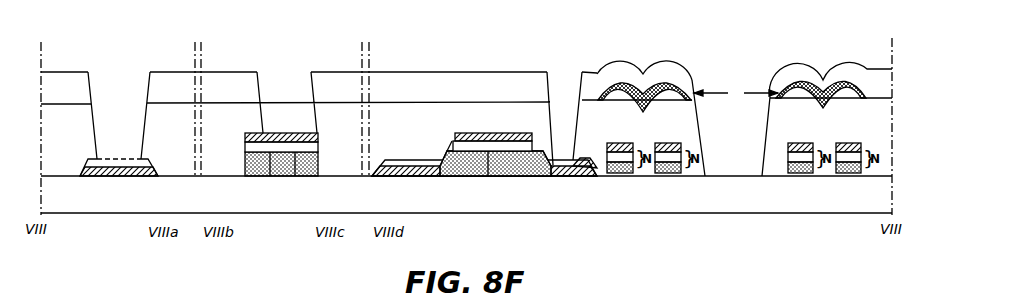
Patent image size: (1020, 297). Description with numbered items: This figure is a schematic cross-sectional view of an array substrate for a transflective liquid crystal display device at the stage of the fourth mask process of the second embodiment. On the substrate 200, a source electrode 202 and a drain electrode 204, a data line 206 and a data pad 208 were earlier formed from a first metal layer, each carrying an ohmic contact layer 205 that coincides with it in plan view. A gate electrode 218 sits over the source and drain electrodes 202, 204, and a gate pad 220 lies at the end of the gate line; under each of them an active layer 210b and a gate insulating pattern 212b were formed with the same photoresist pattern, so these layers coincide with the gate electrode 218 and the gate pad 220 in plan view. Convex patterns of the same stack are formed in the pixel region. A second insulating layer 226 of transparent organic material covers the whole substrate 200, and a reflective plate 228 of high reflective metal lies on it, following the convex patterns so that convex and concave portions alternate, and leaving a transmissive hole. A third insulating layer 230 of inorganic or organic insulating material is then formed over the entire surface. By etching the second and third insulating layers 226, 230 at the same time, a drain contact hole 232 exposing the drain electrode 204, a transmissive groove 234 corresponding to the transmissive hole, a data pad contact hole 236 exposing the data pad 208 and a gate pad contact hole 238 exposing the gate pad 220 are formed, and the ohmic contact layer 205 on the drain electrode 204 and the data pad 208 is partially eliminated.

The substrate 200 is at (432, 199).
The source electrode 202 is at (452, 148).
The drain electrode 204 is at (570, 177).
The ohmic contact layer 205 is at (140, 158).
The data line 206 is at (394, 160).
The data pad 208 is at (121, 178).
The active layer 210b is at (300, 155).
The gate insulating pattern 212b is at (295, 176).
The gate electrode 218 is at (508, 137).
The gate pad 220 is at (268, 176).
The second insulating layer 226 is at (63, 123).
The reflective plate 228 is at (479, 75).
The third insulating layer 230 is at (189, 88).
The drain contact hole 232 is at (569, 83).
The transmissive groove 234 is at (723, 96).
The data pad contact hole 236 is at (116, 86).
The gate pad contact hole 238 is at (282, 80).